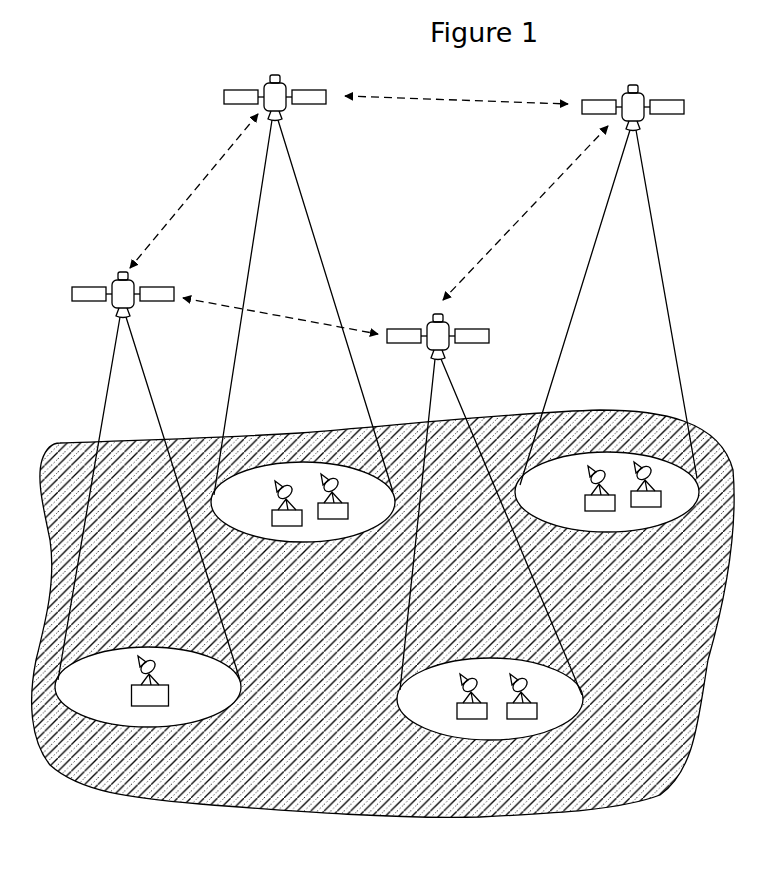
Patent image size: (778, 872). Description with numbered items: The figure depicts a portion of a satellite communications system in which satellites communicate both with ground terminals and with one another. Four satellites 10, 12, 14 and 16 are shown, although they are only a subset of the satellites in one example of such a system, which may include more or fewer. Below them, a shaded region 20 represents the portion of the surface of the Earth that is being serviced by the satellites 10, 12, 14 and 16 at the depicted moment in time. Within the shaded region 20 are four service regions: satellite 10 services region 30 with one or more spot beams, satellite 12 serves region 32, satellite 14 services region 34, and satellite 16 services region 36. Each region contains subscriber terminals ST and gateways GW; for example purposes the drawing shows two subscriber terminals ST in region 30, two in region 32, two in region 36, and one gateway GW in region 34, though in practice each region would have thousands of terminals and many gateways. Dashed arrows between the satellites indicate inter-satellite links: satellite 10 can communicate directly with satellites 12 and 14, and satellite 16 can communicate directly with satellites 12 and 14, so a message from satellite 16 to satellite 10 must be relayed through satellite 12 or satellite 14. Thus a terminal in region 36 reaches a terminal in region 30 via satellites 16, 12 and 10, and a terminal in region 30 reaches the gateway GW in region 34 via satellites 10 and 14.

The satellite 10 is at (288, 78).
The satellite 12 is at (640, 85).
The satellite 14 is at (140, 278).
The satellite 16 is at (452, 318).
The shaded region 20 is at (105, 790).
The region 30 is at (303, 502).
The region 32 is at (607, 492).
The region 34 is at (148, 687).
The region 36 is at (490, 699).